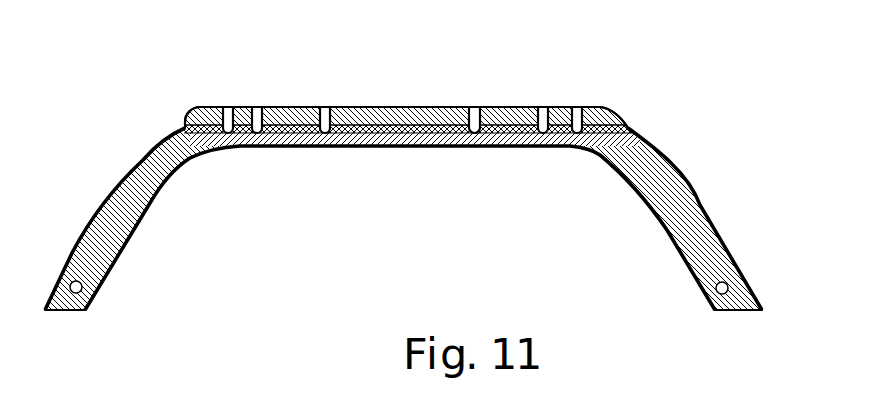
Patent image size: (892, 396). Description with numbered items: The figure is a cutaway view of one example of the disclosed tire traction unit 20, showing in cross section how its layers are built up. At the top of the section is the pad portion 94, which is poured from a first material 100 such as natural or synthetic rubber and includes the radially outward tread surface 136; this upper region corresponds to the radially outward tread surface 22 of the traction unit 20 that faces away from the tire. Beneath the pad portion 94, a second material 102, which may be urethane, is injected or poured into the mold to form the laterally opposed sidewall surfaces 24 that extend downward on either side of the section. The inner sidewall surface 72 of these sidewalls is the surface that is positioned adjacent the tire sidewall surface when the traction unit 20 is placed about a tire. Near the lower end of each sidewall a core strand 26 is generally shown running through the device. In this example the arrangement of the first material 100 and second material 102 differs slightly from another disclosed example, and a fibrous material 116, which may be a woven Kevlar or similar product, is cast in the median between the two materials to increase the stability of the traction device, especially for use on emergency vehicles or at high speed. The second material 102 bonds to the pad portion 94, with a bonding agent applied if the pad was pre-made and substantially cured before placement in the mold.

The tire traction unit 20 is at (152, 117).
The radially outward tread surface 22 is at (487, 106).
The sidewall surfaces 24 is at (122, 187).
The core strand 26 is at (88, 307).
The inner sidewall surface 72 is at (125, 250).
The pad portion 94 is at (382, 106).
The first material 100 is at (422, 106).
The second material 102 is at (160, 182).
The fibrous material 116 is at (626, 128).
The radially outward tread surface 136 is at (290, 106).